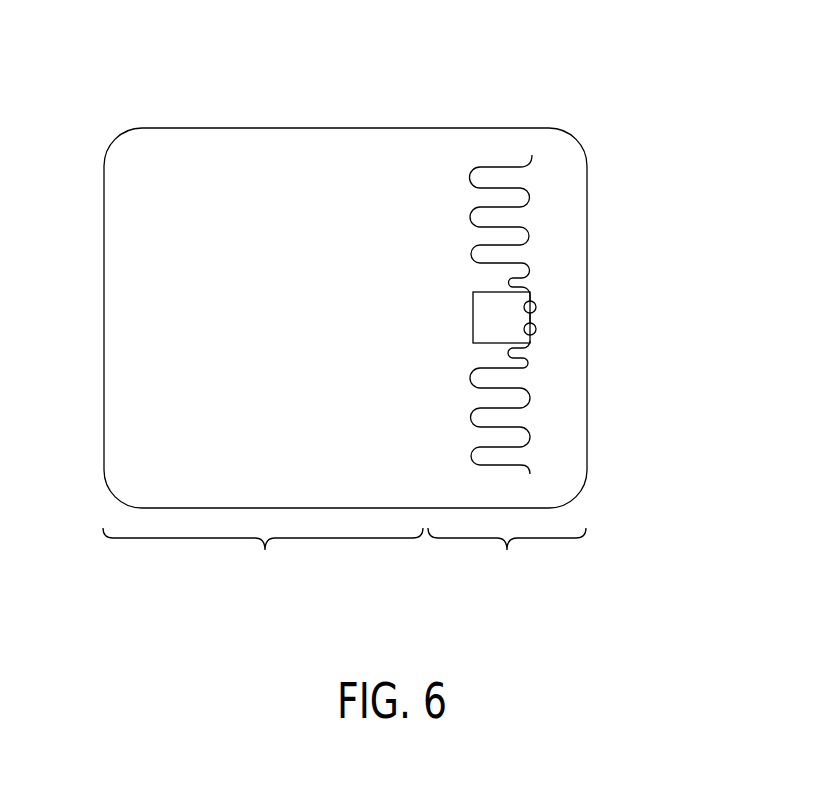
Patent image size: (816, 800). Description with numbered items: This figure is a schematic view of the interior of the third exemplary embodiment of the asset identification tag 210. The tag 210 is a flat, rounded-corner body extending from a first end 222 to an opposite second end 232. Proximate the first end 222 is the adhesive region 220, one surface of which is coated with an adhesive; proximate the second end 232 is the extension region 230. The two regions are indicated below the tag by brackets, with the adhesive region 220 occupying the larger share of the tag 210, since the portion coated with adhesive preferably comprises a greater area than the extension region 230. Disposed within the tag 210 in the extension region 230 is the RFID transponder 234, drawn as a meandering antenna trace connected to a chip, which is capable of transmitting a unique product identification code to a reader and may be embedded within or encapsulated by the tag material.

The asset identification tag 210 is at (371, 310).
The adhesive region 220 is at (263, 560).
The first end 222 is at (104, 230).
The extension region 230 is at (507, 560).
The second end 232 is at (565, 268).
The RFID transponder 234 is at (503, 163).